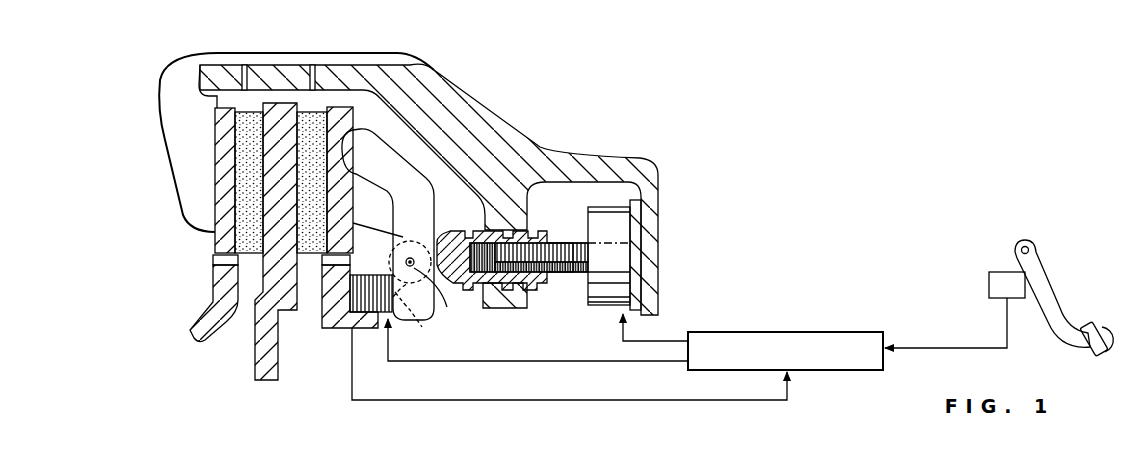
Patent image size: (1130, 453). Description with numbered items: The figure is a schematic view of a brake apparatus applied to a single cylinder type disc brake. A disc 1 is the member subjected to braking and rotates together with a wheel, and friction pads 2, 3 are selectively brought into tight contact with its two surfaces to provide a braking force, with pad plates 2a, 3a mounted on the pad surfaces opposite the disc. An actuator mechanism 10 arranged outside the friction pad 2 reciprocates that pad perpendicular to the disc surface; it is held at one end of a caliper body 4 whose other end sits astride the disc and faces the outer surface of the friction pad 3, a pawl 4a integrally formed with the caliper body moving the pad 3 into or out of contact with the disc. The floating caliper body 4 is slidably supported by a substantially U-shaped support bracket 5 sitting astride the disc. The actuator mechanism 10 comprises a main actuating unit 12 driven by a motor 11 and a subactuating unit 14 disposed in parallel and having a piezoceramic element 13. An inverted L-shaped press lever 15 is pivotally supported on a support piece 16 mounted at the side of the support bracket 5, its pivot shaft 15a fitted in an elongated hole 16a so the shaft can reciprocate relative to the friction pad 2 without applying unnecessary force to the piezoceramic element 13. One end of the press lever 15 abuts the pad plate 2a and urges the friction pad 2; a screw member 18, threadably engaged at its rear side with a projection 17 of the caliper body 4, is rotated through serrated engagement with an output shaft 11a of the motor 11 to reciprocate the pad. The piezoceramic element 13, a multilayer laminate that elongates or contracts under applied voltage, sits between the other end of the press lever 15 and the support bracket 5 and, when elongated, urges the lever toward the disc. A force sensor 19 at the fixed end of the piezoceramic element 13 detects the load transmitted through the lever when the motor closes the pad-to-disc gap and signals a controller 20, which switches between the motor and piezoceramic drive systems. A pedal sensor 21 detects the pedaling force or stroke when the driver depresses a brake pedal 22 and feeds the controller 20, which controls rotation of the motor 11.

The disc 1 is at (280, 112).
The friction pad 2 is at (312, 120).
The pad plate 2a is at (342, 117).
The friction pad 3 is at (250, 125).
The pad plate 3a is at (215, 122).
The caliper body 4 is at (470, 125).
The pawl 4a is at (180, 175).
The support bracket 5 is at (208, 312).
The actuator mechanism 10 is at (495, 194).
The motor 11 is at (620, 253).
The output shaft 11a is at (533, 284).
The main actuating unit 12 is at (567, 286).
The piezoceramic element 13 is at (396, 300).
The subactuating unit 14 is at (341, 336).
The press lever 15 is at (437, 224).
The pivot shaft 15a is at (447, 307).
The support piece 16 is at (373, 247).
The elongated hole 16a is at (404, 240).
The projection 17 is at (520, 210).
The screw member 18 is at (457, 290).
The force sensor 19 is at (357, 313).
The controller 20 is at (833, 332).
The pedal sensor 21 is at (1003, 273).
The brake pedal 22 is at (1070, 337).